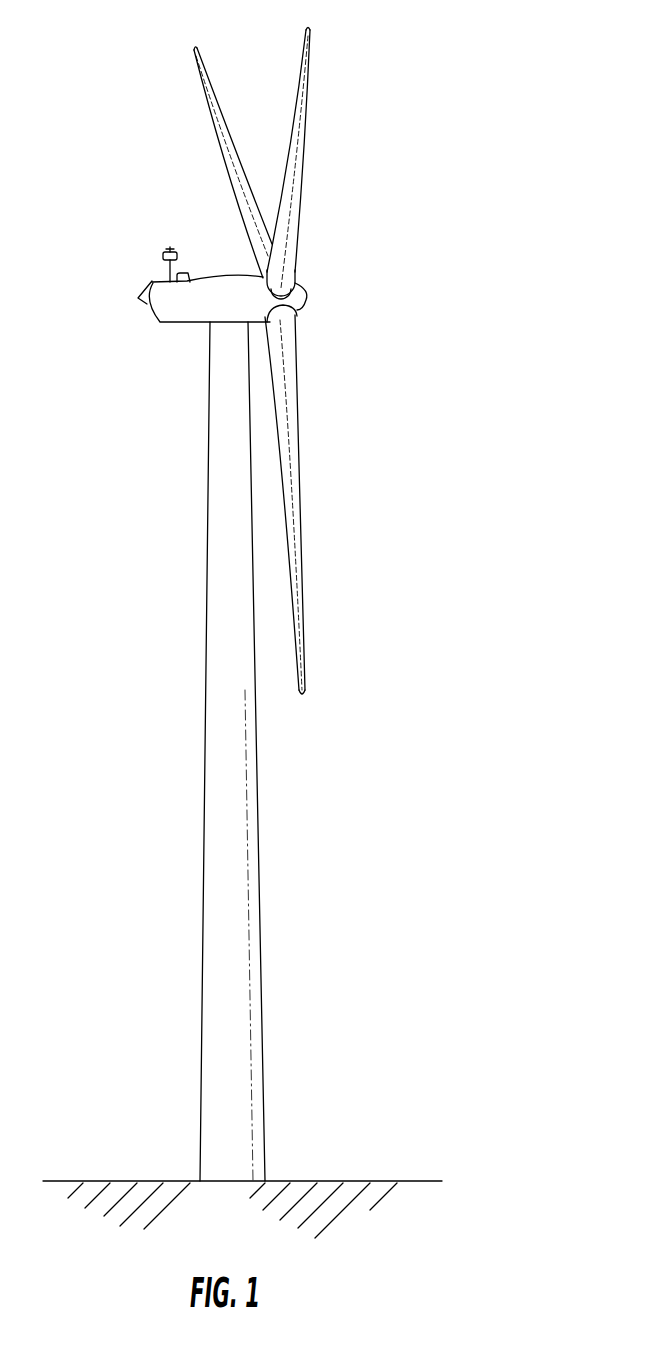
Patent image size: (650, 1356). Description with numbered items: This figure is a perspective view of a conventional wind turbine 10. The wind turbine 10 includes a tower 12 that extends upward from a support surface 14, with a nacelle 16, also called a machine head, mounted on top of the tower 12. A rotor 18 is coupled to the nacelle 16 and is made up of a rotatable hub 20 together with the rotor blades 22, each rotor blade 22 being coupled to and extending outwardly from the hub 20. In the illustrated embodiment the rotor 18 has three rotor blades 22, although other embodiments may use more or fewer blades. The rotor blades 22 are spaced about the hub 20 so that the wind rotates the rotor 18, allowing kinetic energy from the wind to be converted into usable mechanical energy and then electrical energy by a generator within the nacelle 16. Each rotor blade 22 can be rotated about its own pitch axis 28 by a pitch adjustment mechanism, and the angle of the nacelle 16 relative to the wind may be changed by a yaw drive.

The wind turbine 10 is at (427, 109).
The tower 12 is at (223, 870).
The support surface 14 is at (127, 1180).
The nacelle 16 is at (183, 323).
The rotor 18 is at (312, 268).
The rotatable hub 20 is at (302, 306).
The rotor blade 22 is at (302, 72).
The pitch axis 28 is at (245, 198).